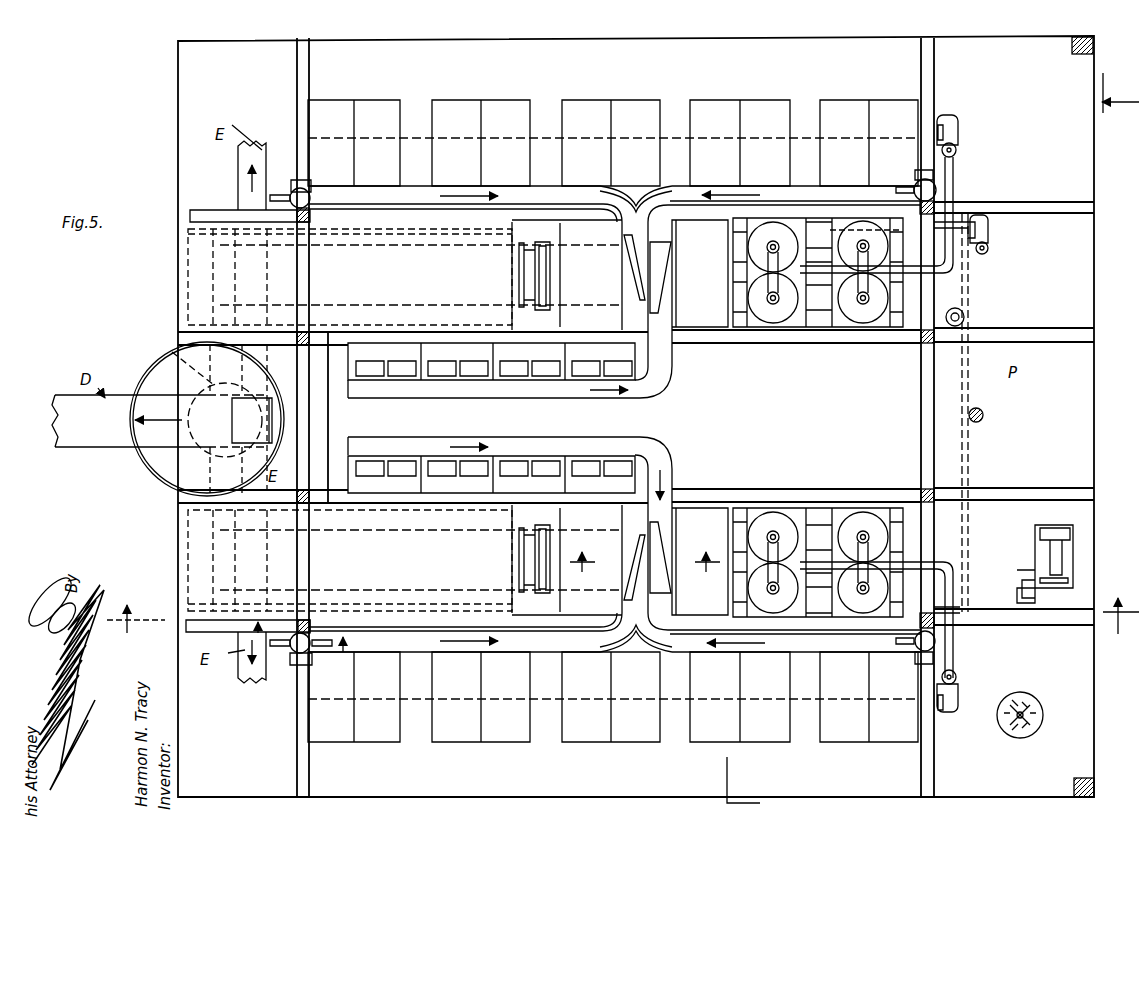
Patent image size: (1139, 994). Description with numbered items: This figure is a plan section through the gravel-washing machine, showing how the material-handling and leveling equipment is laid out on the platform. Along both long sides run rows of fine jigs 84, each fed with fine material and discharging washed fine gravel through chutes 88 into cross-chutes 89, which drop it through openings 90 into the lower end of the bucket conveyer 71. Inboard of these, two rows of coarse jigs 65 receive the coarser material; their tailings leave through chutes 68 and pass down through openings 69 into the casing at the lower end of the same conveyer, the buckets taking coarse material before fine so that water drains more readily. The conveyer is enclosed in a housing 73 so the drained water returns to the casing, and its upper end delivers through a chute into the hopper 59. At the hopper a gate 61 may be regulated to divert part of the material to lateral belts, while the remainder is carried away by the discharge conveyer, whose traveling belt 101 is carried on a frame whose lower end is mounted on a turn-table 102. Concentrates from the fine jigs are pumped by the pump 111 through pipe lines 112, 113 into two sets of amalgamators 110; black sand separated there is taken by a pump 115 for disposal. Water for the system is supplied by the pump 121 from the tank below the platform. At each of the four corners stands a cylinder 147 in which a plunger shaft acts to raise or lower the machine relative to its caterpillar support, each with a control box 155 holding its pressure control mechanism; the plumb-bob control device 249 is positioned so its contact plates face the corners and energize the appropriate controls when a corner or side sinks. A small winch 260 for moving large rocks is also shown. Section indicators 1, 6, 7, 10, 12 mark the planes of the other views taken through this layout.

The fine jigs 84 is at (613, 421).
The pipe line 112 is at (805, 135).
The chutes 88 is at (615, 418).
The cross-chutes 89 is at (636, 419).
The chutes 68 is at (672, 300).
The coarse jigs 65 is at (491, 419).
The openings 69 is at (662, 266).
The openings 90 is at (622, 286).
The bucket conveyer 71 is at (556, 312).
The amalgamators 110 is at (850, 292).
The pipe line 113 is at (957, 268).
The pump 111 is at (958, 137).
The pump 115 is at (986, 218).
The cylinder 147 is at (302, 194).
The control box 155 is at (295, 180).
The hopper 59 is at (160, 462).
The traveling belt 101 is at (72, 455).
The gate 61 is at (252, 420).
The turn-table 102 is at (170, 352).
The pump 121 is at (960, 347).
The winch 260 is at (1065, 553).
The plumb-bob control device 249 is at (1034, 705).
The housing 73 is at (532, 616).
The direction indicator 10 is at (642, 556).
The direction indicator 12 is at (305, 635).
The section line 7- 7 is at (933, 448).
The section line 6- 6 is at (623, 621).
The section line 1 is at (258, 381).